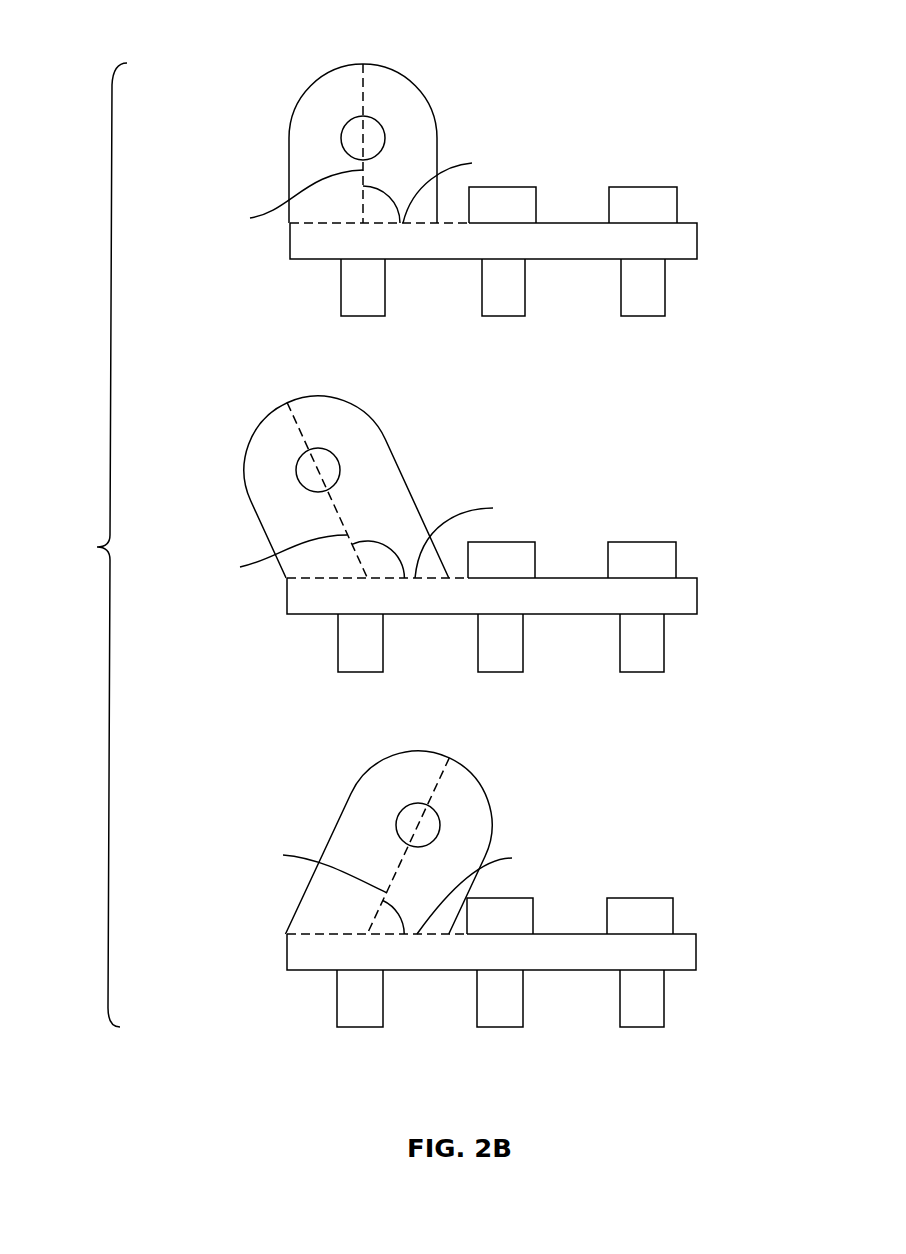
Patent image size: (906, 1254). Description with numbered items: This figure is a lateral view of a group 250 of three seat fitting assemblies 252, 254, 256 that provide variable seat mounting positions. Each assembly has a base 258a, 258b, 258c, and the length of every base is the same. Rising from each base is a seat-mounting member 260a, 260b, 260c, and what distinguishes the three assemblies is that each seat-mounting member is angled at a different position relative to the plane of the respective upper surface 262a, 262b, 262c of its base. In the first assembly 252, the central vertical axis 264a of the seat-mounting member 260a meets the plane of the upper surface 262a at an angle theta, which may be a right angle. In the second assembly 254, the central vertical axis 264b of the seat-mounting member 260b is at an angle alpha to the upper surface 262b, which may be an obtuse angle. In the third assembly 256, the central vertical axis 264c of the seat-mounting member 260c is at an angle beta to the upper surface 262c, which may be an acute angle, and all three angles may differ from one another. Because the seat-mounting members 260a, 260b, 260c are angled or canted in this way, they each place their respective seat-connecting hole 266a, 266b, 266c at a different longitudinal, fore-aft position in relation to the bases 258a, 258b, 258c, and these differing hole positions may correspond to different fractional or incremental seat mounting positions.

The group of seat fitting assemblies 250 is at (415, 524).
The seat fitting assembly 252 is at (450, 55).
The seat fitting assembly 254 is at (438, 422).
The seat fitting assembly 256 is at (538, 798).
The base 258a is at (690, 242).
The base 258b is at (690, 597).
The base 258c is at (690, 952).
The seat-mounting member 260a is at (436, 118).
The seat-mounting member 260b is at (252, 502).
The seat-mounting member 260c is at (330, 833).
The upper surface 262a is at (470, 189).
The upper surface 262b is at (486, 538).
The upper surface 262c is at (495, 890).
The central vertical axis 264a is at (277, 202).
The central vertical axis 264b is at (263, 559).
The central vertical axis 264c is at (304, 868).
The seat-connecting hole 266a is at (370, 133).
The seat-connecting hole 266b is at (313, 468).
The seat-connecting hole 266c is at (420, 823).